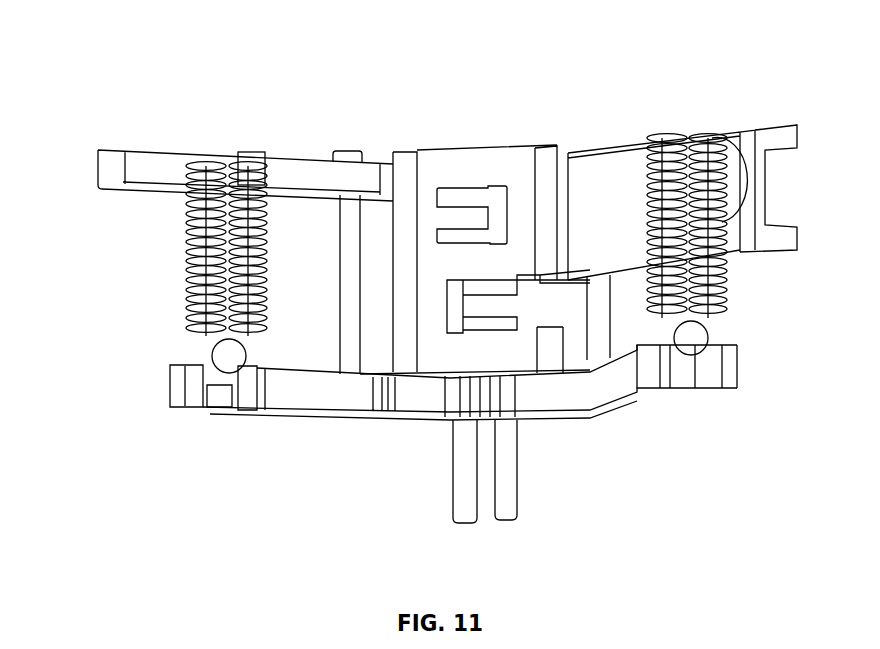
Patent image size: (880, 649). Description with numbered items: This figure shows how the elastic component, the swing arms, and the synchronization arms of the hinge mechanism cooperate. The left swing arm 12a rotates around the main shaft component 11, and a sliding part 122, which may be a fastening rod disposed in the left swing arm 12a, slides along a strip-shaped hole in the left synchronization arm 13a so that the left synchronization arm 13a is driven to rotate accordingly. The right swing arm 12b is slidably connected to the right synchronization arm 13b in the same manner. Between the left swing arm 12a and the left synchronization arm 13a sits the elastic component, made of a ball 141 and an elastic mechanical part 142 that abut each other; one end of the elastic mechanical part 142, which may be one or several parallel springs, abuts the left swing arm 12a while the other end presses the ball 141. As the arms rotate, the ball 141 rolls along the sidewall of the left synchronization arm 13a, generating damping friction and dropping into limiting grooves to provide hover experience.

The main shaft component 11 is at (498, 157).
The left swing arm 12a is at (163, 168).
The right swing arm 12b is at (772, 240).
The sliding part 122 is at (345, 155).
The left synchronization arm 13a is at (285, 393).
The right synchronization arm 13b is at (650, 392).
The ball 141 is at (210, 355).
The elastic mechanical part 142 is at (185, 232).